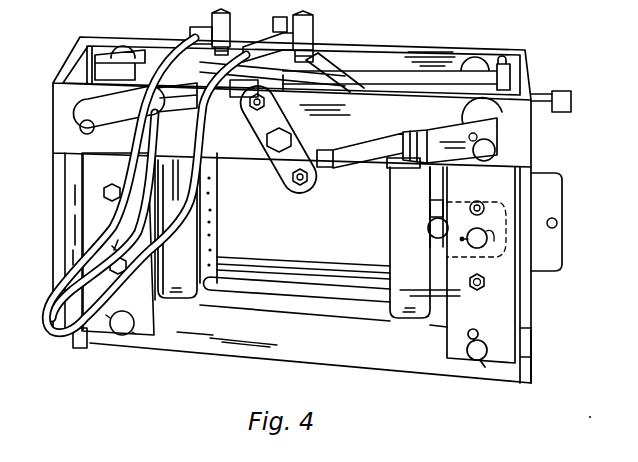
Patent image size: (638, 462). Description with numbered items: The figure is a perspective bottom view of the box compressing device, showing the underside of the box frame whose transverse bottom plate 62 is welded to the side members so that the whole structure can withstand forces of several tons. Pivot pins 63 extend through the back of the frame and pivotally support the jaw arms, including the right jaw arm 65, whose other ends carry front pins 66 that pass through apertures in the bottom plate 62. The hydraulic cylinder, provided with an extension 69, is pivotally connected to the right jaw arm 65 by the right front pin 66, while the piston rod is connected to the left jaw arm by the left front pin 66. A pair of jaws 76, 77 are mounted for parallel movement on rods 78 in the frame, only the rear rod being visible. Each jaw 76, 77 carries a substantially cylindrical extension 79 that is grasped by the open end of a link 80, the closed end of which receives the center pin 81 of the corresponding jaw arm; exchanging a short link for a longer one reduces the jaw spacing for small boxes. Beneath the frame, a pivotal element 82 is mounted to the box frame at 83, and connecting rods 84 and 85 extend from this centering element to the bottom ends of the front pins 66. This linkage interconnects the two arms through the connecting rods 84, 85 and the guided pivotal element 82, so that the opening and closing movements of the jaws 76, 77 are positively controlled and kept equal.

The bottom plate 62 is at (330, 351).
The pivot pin 63 is at (122, 311).
The right jaw arm 65 is at (490, 314).
The front pin 66 is at (83, 132).
The extension 69 is at (398, 79).
The jaw 76 is at (185, 259).
The jaw 77 is at (413, 253).
The rod 78 is at (272, 297).
The cylindrical extension 79 is at (428, 232).
The link 80 is at (442, 207).
The center pin 81 is at (483, 247).
The pivotal element 82 is at (290, 162).
The mounting of pivotal element 83 is at (267, 144).
The connecting rod 84 is at (174, 110).
The connecting rod 85 is at (368, 152).